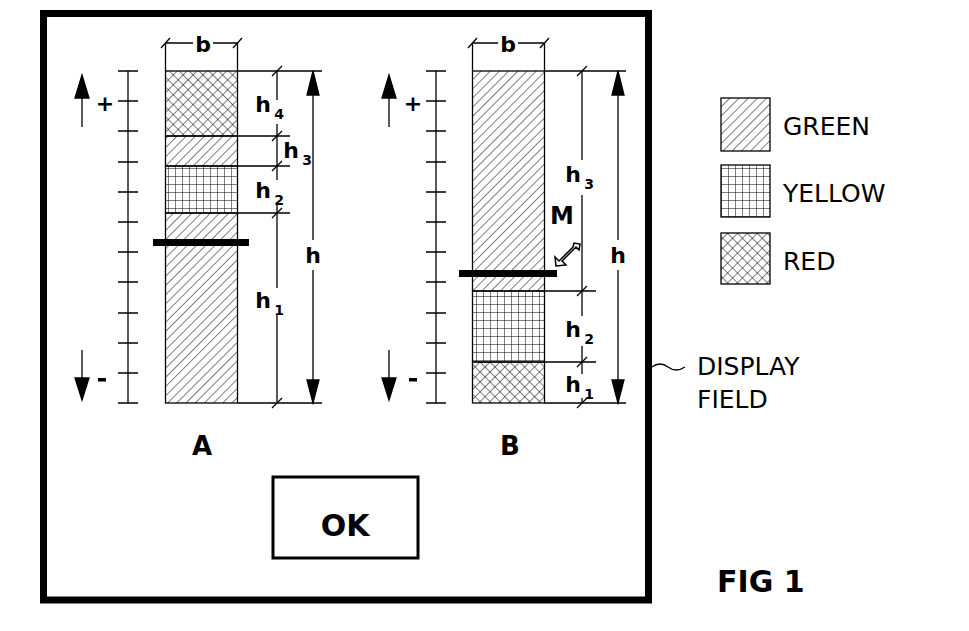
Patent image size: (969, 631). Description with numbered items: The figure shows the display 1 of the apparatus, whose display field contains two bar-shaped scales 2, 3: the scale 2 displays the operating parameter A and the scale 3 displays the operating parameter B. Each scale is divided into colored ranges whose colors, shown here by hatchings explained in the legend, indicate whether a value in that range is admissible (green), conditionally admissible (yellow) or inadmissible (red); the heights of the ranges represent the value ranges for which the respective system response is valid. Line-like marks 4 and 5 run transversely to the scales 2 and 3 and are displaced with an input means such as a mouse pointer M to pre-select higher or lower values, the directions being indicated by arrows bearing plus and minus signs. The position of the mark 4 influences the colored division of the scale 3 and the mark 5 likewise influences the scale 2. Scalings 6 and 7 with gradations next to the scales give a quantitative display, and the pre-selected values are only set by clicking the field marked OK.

The display 1 is at (652, 487).
The scale 2 is at (178, 322).
The scale 3 is at (482, 322).
The mark 4 is at (160, 240).
The mark 5 is at (461, 268).
The scaling 6 is at (128, 404).
The scaling 7 is at (436, 404).